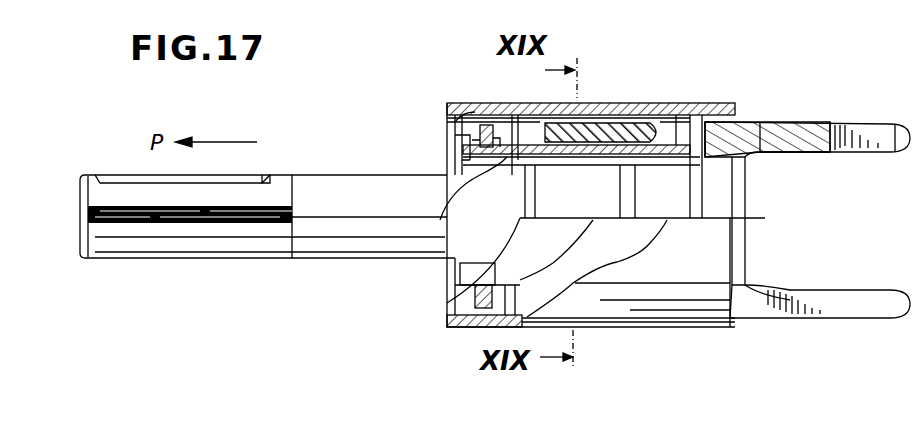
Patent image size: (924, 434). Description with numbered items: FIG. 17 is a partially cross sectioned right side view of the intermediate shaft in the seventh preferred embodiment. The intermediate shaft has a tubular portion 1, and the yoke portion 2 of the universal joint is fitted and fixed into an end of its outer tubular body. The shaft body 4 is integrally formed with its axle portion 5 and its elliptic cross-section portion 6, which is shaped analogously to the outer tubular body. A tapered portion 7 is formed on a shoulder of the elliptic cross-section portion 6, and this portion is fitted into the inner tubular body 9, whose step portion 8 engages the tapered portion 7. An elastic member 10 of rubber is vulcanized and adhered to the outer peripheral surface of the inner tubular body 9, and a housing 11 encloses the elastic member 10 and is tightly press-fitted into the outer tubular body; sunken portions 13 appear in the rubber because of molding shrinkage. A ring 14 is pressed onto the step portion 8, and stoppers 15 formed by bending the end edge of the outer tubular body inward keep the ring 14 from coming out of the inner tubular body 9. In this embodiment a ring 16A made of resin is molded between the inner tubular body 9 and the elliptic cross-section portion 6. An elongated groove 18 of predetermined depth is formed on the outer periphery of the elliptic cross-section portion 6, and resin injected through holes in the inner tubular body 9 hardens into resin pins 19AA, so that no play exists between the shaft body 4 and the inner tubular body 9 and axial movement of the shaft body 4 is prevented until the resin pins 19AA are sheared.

The tubular portion 1 is at (639, 106).
The yoke portion 2 is at (811, 118).
The shaft body 4 is at (347, 176).
The axle portion 5 is at (202, 258).
The elliptic cross-section portion 6 is at (636, 192).
The tapered portion 7 is at (465, 150).
The step portion 8 is at (492, 160).
The inner tubular body 9 is at (660, 160).
The elastic member 10 is at (657, 108).
The housing 11 is at (596, 110).
The sunken portions 13 is at (515, 108).
The ring 14 is at (460, 128).
The stoppers 15 is at (450, 104).
The ring made of a resin 16A is at (575, 157).
The elongated groove 18 is at (540, 190).
The resin pins 19AA is at (580, 218).